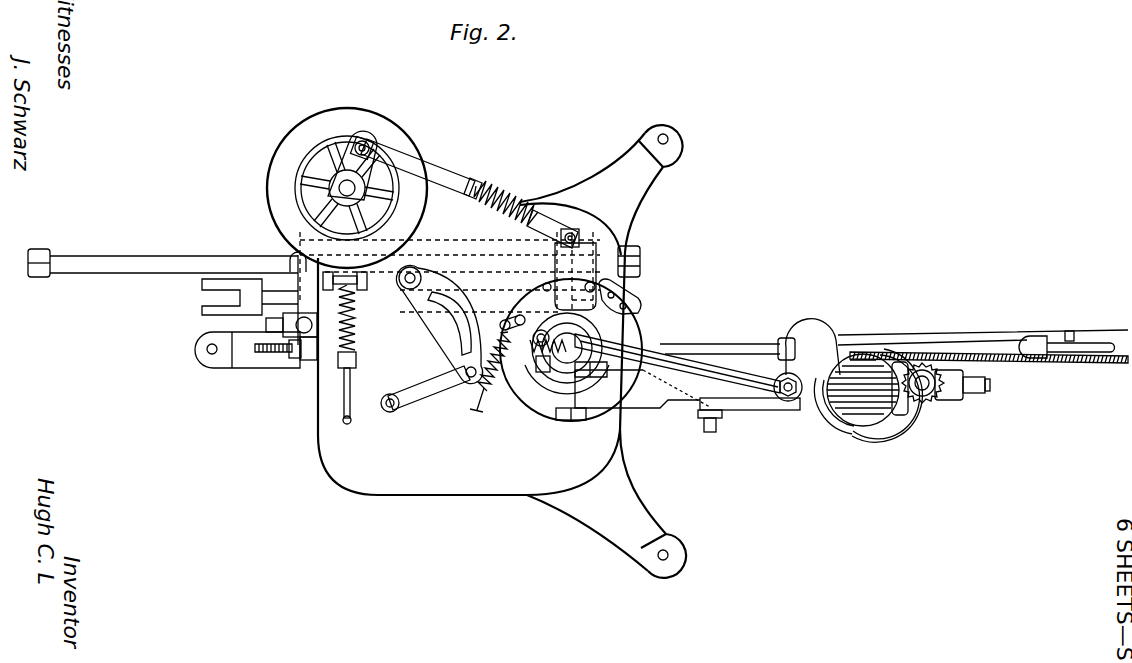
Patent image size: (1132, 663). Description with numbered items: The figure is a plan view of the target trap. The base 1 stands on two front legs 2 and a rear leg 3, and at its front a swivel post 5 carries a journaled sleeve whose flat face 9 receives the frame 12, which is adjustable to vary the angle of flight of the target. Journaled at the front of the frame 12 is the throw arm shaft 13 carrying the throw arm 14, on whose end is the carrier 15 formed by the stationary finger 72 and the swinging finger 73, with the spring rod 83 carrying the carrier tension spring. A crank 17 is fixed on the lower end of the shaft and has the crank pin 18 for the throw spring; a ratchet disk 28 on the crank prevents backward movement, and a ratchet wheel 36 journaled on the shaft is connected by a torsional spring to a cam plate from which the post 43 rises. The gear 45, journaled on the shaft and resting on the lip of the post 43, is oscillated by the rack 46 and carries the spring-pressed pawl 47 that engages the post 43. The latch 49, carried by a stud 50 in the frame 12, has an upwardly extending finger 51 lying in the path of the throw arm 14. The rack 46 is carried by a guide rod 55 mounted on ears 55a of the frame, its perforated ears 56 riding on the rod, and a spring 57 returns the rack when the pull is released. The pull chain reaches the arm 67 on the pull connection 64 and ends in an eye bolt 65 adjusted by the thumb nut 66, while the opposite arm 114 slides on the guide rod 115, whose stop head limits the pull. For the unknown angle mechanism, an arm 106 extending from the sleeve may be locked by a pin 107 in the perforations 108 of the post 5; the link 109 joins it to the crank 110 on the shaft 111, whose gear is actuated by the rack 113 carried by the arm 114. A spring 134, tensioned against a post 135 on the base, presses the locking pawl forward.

The base 1 is at (405, 342).
The front legs 2 is at (502, 351).
The rear leg 3 is at (247, 350).
The swivel post 5 is at (604, 322).
The flat face 9 is at (540, 383).
The frame 12 is at (642, 389).
The throw arm shaft 13 is at (805, 400).
The throw arm 14 is at (657, 358).
The carrier 15 is at (548, 340).
The crank 17 is at (966, 393).
The crank pin 18 is at (978, 390).
The ratchet disk 28 is at (925, 398).
The ratchet wheel 36 is at (928, 395).
The post 43 is at (544, 362).
The gear 45 is at (827, 420).
The rack 46 is at (950, 332).
The pawl 47 is at (868, 432).
The latch 49 is at (742, 410).
The stud 50 is at (707, 433).
The finger 51 is at (602, 362).
The guide rod 55 is at (735, 352).
The ears 55a is at (818, 332).
The perforated ears 56 is at (783, 340).
The spring 57 is at (1002, 363).
The pull connection 64 is at (257, 313).
The eye bolt 65 is at (263, 352).
The thumb nut 66 is at (292, 357).
The arm 67 is at (307, 358).
The stationary finger 72 is at (439, 324).
The swinging finger 73 is at (425, 389).
The spring rod 83 is at (478, 398).
The arm 106 is at (575, 300).
The pin 107 is at (607, 283).
The perforations 108 is at (630, 306).
The link 109 is at (427, 170).
The crank 110 is at (355, 162).
The shaft 111 is at (345, 189).
The rack 113 is at (506, 214).
The arm 114 is at (307, 275).
The guide rod 115 is at (118, 258).
The spring 134 is at (357, 330).
The post 135 is at (357, 358).